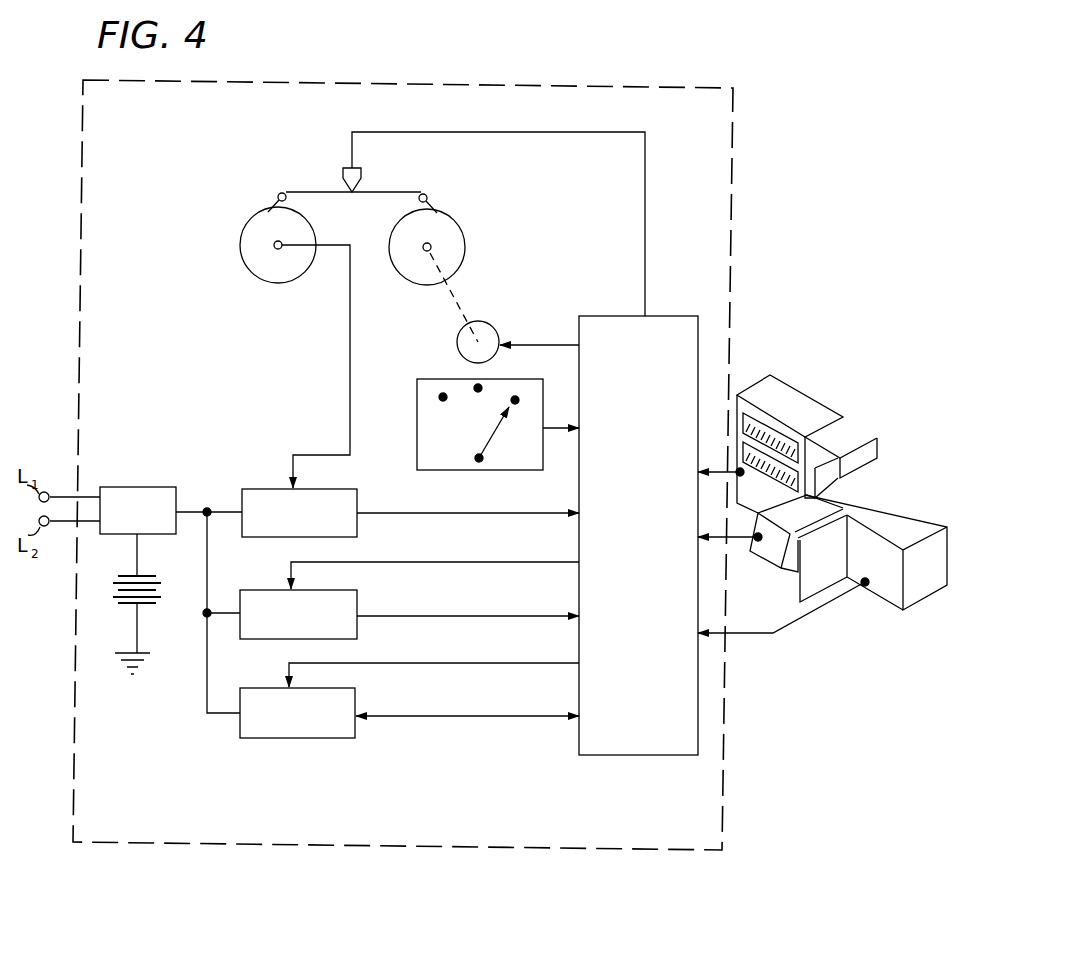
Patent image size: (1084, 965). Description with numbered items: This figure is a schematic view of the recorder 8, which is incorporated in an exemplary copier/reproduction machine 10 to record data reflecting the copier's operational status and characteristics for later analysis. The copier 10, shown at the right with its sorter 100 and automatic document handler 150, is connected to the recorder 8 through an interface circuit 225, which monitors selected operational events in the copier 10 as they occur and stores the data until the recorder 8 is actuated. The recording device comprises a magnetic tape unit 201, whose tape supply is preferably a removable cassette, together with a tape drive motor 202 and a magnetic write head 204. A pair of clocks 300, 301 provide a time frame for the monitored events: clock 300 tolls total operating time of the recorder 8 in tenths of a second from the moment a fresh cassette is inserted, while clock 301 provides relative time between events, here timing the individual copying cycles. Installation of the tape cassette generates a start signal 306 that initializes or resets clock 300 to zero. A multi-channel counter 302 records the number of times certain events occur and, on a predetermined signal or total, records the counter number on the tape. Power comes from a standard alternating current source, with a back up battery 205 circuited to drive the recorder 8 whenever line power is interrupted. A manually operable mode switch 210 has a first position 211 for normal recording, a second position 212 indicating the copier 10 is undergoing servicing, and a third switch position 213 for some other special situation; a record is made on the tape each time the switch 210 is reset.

The recorder 8 is at (735, 143).
The magnetic write head 204 is at (345, 178).
The magnetic tape unit 201 is at (395, 190).
The tape drive motor 202 is at (490, 322).
The interface circuit 225 is at (660, 316).
The mode switch 210 is at (483, 461).
The first position 211 is at (515, 400).
The second position 212 is at (478, 388).
The third switch position 213 is at (443, 396).
The start signal 306 is at (350, 330).
The clock 300 is at (357, 492).
The clock 301 is at (357, 594).
The multi-channel counter 302 is at (355, 691).
The back up battery 205 is at (137, 604).
The sorter 100 is at (802, 401).
The copier/reproduction machine 10 is at (873, 489).
The automatic document handler 150 is at (775, 550).